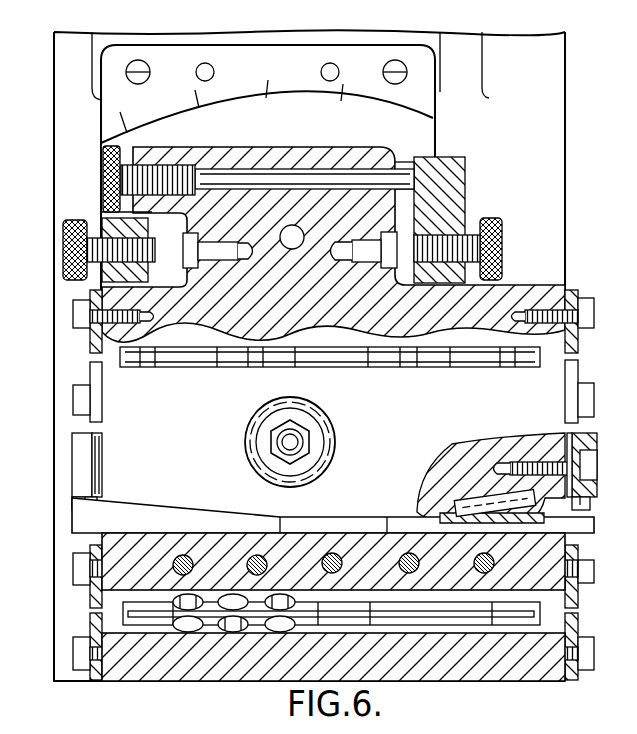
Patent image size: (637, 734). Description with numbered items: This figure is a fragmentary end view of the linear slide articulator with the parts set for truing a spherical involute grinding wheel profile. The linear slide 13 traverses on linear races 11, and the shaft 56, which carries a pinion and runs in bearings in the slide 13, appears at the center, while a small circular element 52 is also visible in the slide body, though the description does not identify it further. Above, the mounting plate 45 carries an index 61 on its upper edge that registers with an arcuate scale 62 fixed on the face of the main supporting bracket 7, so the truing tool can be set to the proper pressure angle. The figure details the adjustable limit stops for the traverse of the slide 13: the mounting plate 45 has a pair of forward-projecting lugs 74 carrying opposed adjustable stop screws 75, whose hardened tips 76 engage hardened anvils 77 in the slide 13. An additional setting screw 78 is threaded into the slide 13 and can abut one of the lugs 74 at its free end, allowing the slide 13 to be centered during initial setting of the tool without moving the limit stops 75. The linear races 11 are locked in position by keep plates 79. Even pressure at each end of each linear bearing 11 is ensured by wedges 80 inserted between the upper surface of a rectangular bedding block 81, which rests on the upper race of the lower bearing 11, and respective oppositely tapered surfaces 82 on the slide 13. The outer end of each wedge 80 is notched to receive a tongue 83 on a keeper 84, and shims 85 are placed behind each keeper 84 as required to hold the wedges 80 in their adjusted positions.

The main supporting bracket 7 is at (60, 147).
The linear races 11 is at (386, 366).
The linear slide 13 is at (233, 145).
The mounting plate 45 is at (101, 211).
The pivot pin 52 is at (296, 228).
The shaft 56 is at (292, 442).
The index 61 is at (122, 153).
The arcuate scale 62 is at (247, 100).
The forward-projecting lugs 74 is at (455, 181).
The adjustable stop screws 75 is at (501, 256).
The hardened tips 76 is at (405, 250).
The hardened anvils 77 is at (396, 234).
The setting screw 78 is at (102, 173).
The keep plates 79 is at (93, 368).
The wedges 80 is at (590, 525).
The rectangular bedding block 81 is at (303, 543).
The oppositely tapered surfaces 82 is at (133, 511).
The tongue 83 is at (593, 502).
The keeper 84 is at (592, 443).
The shims 85 is at (574, 438).